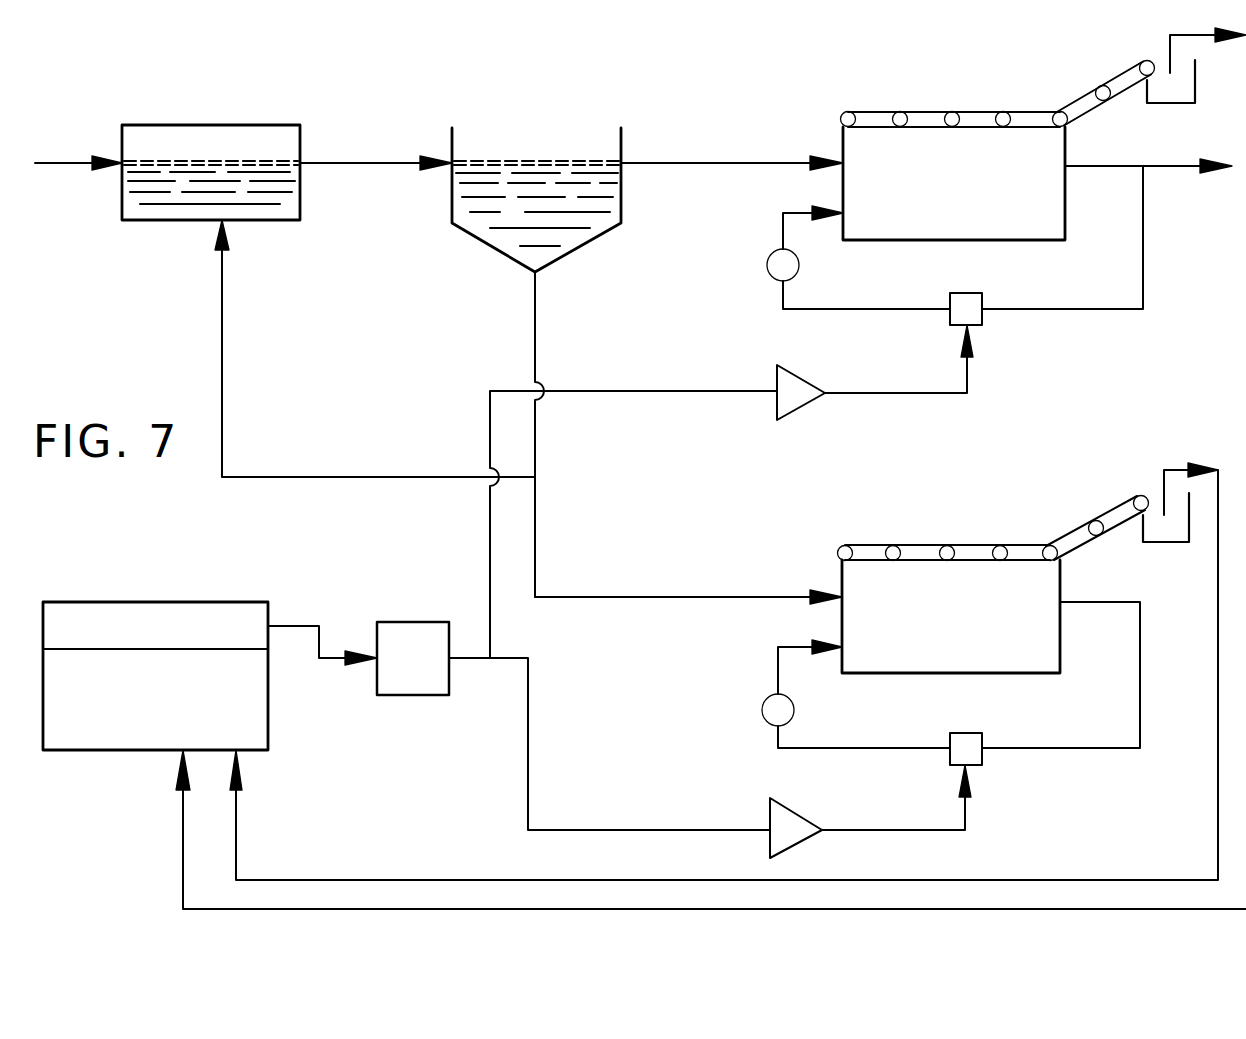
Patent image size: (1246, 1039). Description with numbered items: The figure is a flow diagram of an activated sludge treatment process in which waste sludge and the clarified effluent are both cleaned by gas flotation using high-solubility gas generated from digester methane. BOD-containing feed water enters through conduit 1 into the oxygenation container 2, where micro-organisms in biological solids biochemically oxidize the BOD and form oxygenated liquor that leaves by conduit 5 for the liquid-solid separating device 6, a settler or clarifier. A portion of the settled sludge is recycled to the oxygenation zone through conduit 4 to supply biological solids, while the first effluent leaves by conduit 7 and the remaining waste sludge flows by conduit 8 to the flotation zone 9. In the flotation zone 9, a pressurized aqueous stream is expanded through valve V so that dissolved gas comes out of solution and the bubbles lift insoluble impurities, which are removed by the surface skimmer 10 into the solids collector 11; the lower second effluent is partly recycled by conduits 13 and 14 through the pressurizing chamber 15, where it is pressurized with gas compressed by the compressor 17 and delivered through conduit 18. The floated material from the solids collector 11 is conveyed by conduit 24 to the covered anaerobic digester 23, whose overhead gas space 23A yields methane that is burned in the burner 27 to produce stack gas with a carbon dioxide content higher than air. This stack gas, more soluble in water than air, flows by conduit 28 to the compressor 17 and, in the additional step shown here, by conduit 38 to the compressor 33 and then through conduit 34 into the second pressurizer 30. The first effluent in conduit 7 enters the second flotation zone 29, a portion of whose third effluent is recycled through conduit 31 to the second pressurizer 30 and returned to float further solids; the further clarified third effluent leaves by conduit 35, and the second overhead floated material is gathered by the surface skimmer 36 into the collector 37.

The conduit 1 is at (68, 136).
The oxygenation container 2 is at (233, 125).
The conduit 4 is at (297, 477).
The conduit 5 is at (376, 160).
The liquid-solid separating device 6 is at (452, 203).
The conduit 7 is at (729, 162).
The conduit 8 is at (666, 575).
The flotation zone 9 is at (842, 617).
The surface skimmer 10 is at (985, 521).
The solids collector 11 is at (1192, 520).
The conduit 13 is at (1116, 602).
The conduit 14 is at (827, 748).
The pressurizing chamber 15 is at (971, 733).
The compressor 17 is at (797, 810).
The conduit 18 is at (873, 830).
The anaerobic digester 23 is at (644, 755).
The overhead gas space 23A is at (178, 638).
The conduit 24 is at (1176, 470).
The burner 27 is at (428, 622).
The conduit 28 is at (615, 830).
The second flotation zone 29 is at (843, 178).
The second pressurizer 30 is at (980, 293).
The conduit 31 is at (1143, 267).
The compressor 33 is at (809, 386).
The conduit 34 is at (903, 376).
The conduit 35 is at (1172, 170).
The surface skimmer 36 is at (975, 76).
The collector 37 is at (1196, 84).
The conduit 38 is at (490, 545).